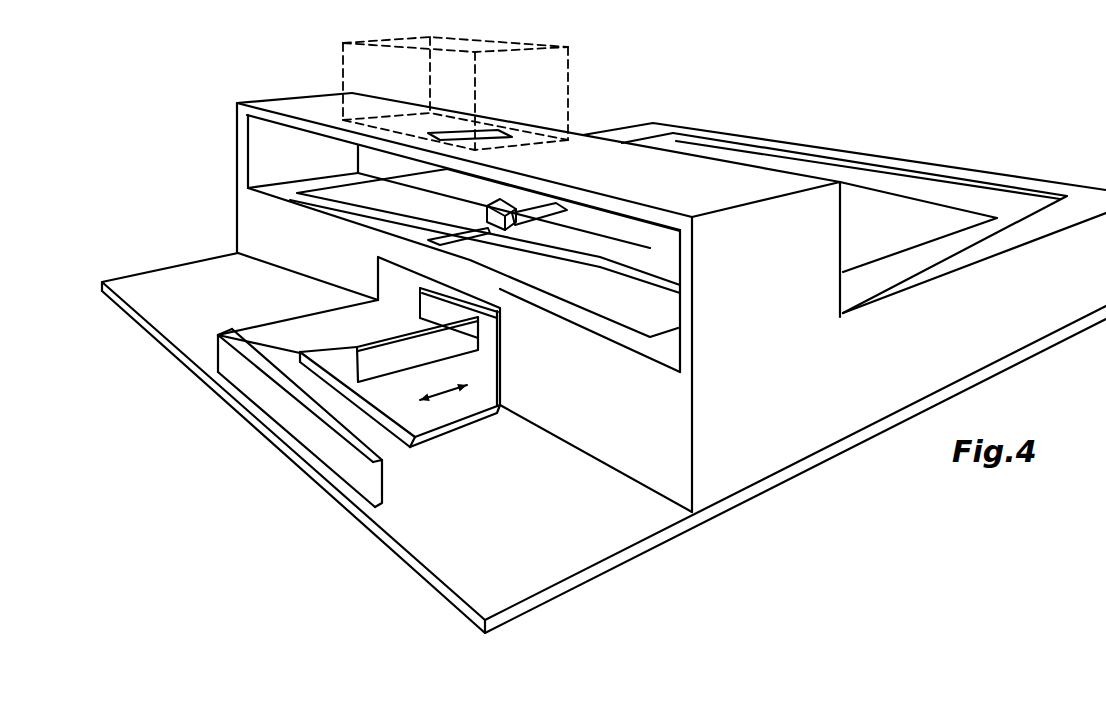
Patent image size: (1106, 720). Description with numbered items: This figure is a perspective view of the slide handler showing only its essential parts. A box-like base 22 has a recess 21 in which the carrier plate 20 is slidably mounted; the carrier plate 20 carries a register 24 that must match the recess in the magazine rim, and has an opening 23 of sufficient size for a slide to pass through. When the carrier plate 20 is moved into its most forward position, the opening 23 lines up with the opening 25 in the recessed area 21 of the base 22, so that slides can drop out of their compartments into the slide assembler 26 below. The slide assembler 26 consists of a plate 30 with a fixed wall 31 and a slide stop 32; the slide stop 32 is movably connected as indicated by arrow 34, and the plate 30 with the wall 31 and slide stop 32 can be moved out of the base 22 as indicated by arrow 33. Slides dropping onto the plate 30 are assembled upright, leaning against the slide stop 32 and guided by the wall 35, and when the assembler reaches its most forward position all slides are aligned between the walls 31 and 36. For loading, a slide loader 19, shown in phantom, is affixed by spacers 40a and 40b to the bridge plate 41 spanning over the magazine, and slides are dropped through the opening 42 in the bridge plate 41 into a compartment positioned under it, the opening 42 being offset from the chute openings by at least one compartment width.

The slide loader 19 is at (557, 63).
The carrier plate 20 is at (645, 259).
The recess 21 is at (972, 197).
The base 22 is at (973, 355).
The opening 23 is at (543, 216).
The register 24 is at (485, 216).
The opening 25 is at (468, 233).
The slide assembler 26 is at (343, 368).
The plate 30 is at (435, 408).
The fixed wall 31 is at (500, 350).
The slide stop 32 is at (402, 362).
The arrow 33 is at (447, 393).
The arrow 34 is at (418, 347).
The wall 35 is at (300, 333).
The wall 36 is at (260, 385).
The spacer 40a is at (778, 260).
The spacer 40b is at (273, 148).
The bridge plate 41 is at (737, 182).
The opening 42 is at (505, 128).